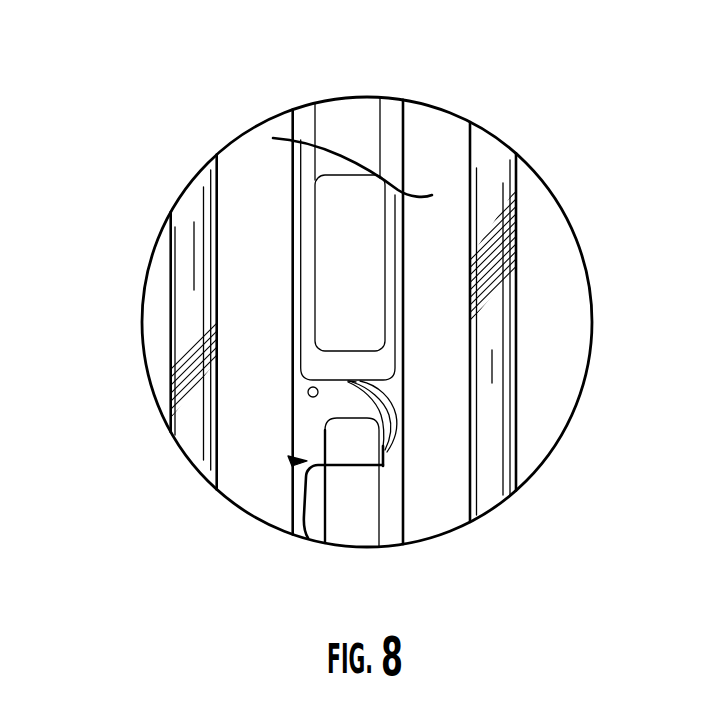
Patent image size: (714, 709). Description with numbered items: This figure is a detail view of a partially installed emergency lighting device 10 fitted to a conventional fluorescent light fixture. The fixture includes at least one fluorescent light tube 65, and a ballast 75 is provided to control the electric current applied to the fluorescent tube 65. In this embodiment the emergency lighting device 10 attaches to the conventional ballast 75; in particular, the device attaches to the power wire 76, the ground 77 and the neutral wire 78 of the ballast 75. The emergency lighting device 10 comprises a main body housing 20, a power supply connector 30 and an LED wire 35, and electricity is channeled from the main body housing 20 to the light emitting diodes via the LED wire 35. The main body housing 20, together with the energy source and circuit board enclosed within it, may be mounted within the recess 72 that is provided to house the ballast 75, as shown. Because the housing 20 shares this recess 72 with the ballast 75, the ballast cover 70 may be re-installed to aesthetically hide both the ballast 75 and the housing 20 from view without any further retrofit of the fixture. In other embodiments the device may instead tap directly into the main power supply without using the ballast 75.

The emergency lighting device 10 is at (292, 464).
The main body housing 20 is at (350, 527).
The power supply connector 30 is at (388, 448).
The LED wire 35 is at (308, 536).
The fluorescent light tube 65 is at (497, 452).
The ballast cover 70 is at (342, 123).
The recess 72 is at (307, 392).
The ballast 75 is at (355, 280).
The power wire 76 is at (375, 398).
The ground 77 is at (383, 403).
The neutral wire 78 is at (372, 404).